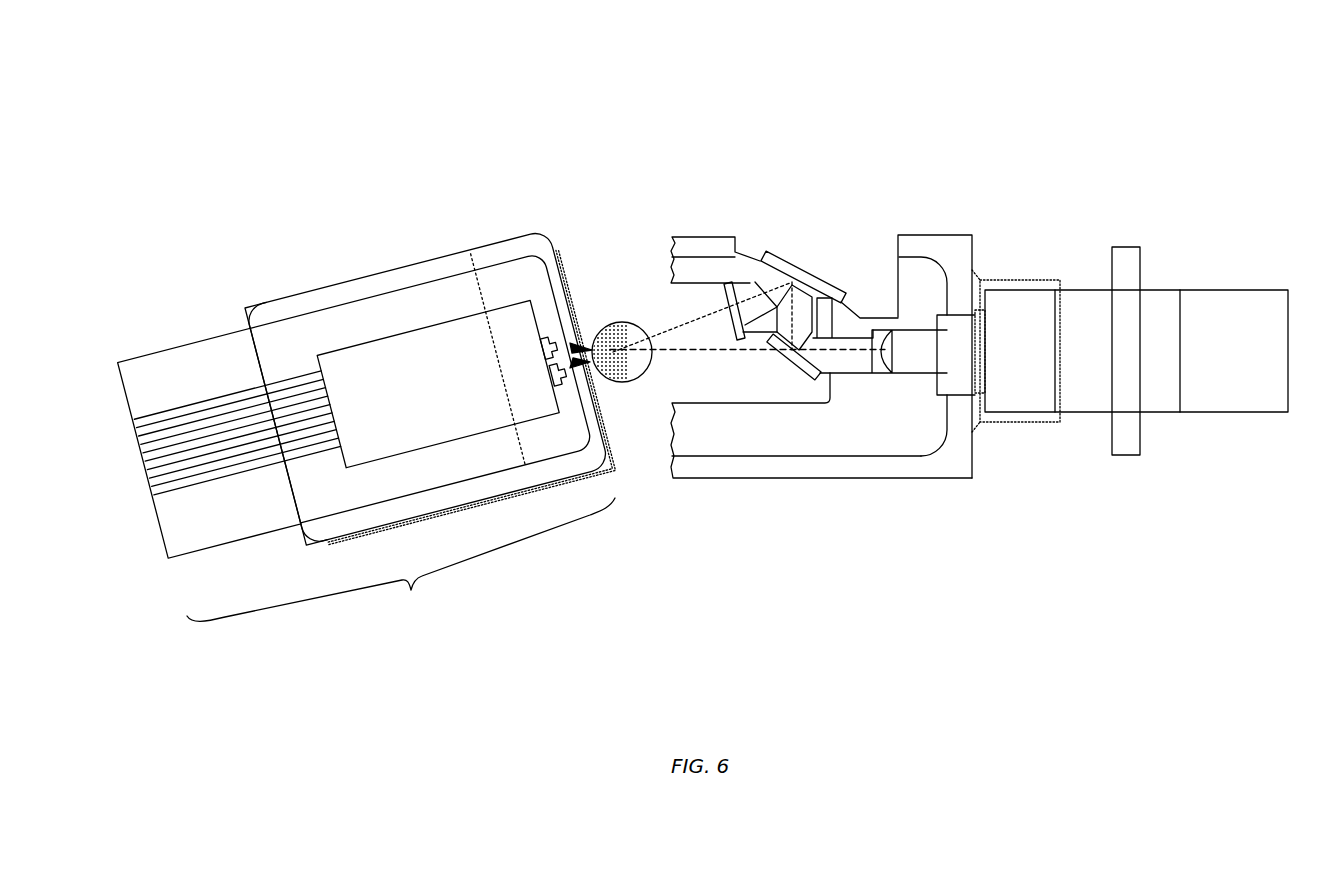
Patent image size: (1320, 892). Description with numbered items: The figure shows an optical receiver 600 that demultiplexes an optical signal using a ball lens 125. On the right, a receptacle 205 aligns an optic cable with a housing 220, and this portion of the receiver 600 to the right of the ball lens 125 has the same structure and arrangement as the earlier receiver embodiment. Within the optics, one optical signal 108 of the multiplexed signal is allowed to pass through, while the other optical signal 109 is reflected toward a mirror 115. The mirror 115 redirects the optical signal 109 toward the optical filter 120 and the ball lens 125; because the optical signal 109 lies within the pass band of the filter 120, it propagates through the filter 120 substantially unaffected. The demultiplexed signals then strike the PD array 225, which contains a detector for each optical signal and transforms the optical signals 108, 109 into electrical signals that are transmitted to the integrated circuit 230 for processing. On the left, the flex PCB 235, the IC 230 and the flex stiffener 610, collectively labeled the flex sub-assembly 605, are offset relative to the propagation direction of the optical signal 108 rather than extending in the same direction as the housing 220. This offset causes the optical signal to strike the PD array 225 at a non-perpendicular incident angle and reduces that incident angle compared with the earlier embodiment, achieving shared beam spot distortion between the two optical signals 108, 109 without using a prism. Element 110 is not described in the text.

The optical receiver 600 is at (921, 113).
The optical filter 120 is at (722, 282).
The optical signal 109 is at (755, 293).
The mirror 115 is at (807, 264).
The optical signal 108 is at (757, 348).
The detector housing 110 is at (817, 377).
The housing 220 is at (940, 470).
The receptacle 205 is at (1223, 290).
The ball lens 125 is at (637, 379).
The PD array 225 is at (547, 333).
The integrated circuit 230 is at (460, 395).
The flex PCB 235 is at (197, 337).
The flex stiffener 610 is at (469, 503).
The flex sub-assembly 605 is at (401, 426).